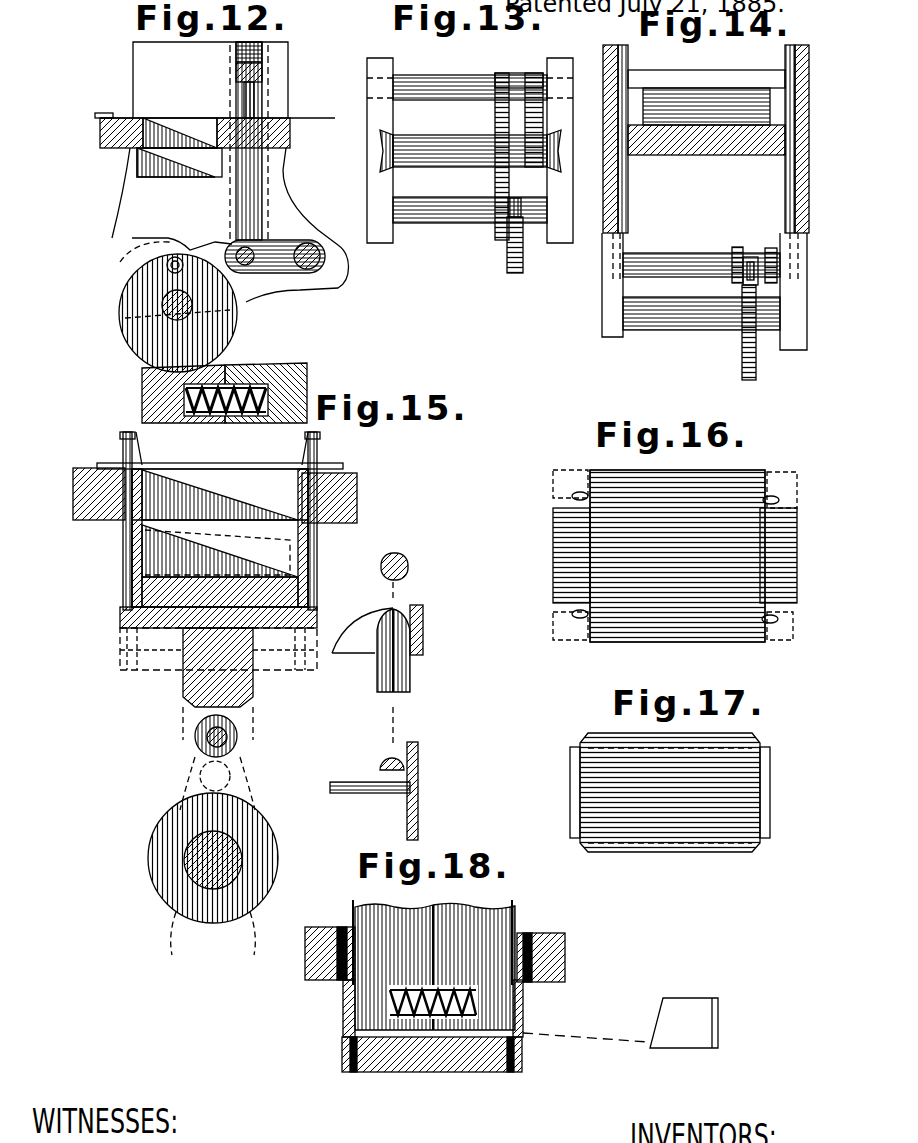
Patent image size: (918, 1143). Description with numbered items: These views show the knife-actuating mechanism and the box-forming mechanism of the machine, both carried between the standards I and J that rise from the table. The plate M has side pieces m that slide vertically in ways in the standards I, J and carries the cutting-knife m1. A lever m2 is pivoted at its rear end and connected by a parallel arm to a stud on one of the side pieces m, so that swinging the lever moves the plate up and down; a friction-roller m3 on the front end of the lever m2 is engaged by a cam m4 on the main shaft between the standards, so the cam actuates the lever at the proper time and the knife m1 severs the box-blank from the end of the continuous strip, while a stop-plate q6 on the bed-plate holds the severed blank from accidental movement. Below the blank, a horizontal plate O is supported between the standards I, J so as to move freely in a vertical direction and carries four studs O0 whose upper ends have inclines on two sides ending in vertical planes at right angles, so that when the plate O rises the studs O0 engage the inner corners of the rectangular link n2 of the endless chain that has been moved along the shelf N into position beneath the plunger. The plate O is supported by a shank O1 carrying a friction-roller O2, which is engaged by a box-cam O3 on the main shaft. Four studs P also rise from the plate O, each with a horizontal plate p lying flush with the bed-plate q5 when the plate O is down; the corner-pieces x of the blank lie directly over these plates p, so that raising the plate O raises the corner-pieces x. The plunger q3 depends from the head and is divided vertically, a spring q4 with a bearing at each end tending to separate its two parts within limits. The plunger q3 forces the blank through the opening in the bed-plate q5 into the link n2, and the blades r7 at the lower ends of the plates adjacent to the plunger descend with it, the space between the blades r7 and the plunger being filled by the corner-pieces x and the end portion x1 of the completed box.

In FIG. 12, the standard J is at (230, 172).
In FIG. 13, the standard J is at (386, 174).
In FIG. 14, the standard J is at (582, 331).
In FIG. 13, the standard I is at (566, 168).
In FIG. 14, the standard I is at (712, 200).
In FIG. 12, the plate M is at (274, 80).
In FIG. 13, the plate M is at (470, 135).
In FIG. 12, the side pieces m is at (231, 141).
In FIG. 13, the side pieces m is at (468, 149).
In FIG. 14, the side pieces m is at (706, 187).
In FIG. 12, the cutting-knife m1 is at (220, 99).
In FIG. 14, the cutting-knife m1 is at (706, 99).
In FIG. 12, the lever m2 is at (275, 281).
In FIG. 13, the lever m2 is at (497, 156).
In FIG. 14, the lever m2 is at (737, 252).
In FIG. 12, the friction-roller m3 is at (178, 288).
In FIG. 13, the friction-roller m3 is at (498, 233).
In FIG. 14, the friction-roller m3 is at (723, 306).
In FIG. 12, the cam m4 is at (219, 308).
In FIG. 13, the cam m4 is at (538, 256).
In FIG. 14, the cam m4 is at (771, 344).
In FIG. 12, the plunger q3 is at (207, 393).
In FIG. 18, the plunger q3 is at (422, 946).
In FIG. 12, the spring q4 is at (286, 354).
In FIG. 15, the bed-plate q5 is at (198, 502).
In FIG. 18, the bed-plate q5 is at (458, 959).
In FIG. 12, the stop-plate q6 is at (195, 125).
In FIG. 15, the horizontal plate p is at (236, 514).
In FIG. 16, the horizontal plate p is at (672, 565).
In FIG. 15, the stud P is at (236, 475).
In FIG. 15, the corner-pieces x is at (222, 446).
In FIG. 16, the corner-pieces x is at (682, 555).
In FIG. 17, the corner-pieces x is at (676, 792).
In FIG. 16, the end portion x1 is at (680, 555).
In FIG. 17, the end portion x1 is at (673, 792).
In FIG. 18, the end portion x1 is at (324, 1010).
In FIG. 15, the horizontal plate O is at (385, 673).
In FIG. 15, the studs O0 is at (197, 564).
In FIG. 15, the shank O1 is at (218, 684).
In FIG. 15, the friction-roller O2 is at (227, 762).
In FIG. 15, the box-cam O3 is at (227, 874).
In FIG. 15, the rectangular links n2 is at (432, 722).
In FIG. 18, the rectangular links n2 is at (454, 1008).
In FIG. 18, the blade r7 is at (431, 934).
In FIG. 18, the shelf N is at (432, 1076).